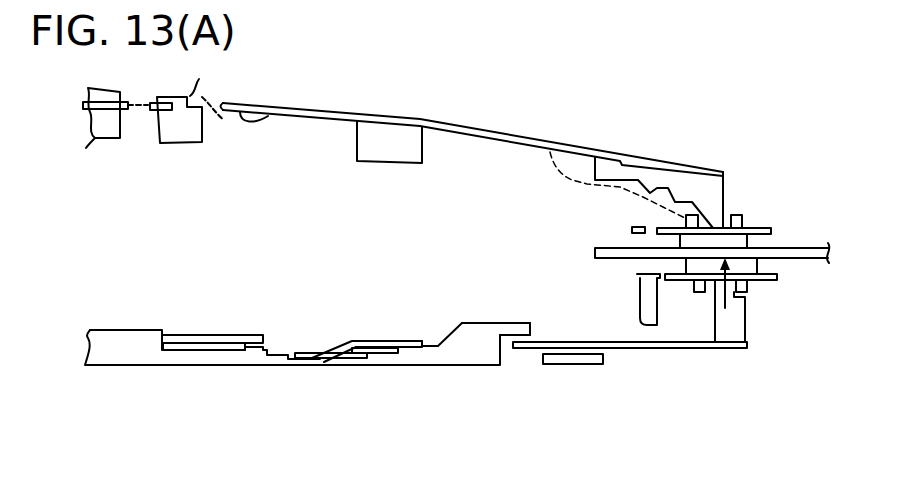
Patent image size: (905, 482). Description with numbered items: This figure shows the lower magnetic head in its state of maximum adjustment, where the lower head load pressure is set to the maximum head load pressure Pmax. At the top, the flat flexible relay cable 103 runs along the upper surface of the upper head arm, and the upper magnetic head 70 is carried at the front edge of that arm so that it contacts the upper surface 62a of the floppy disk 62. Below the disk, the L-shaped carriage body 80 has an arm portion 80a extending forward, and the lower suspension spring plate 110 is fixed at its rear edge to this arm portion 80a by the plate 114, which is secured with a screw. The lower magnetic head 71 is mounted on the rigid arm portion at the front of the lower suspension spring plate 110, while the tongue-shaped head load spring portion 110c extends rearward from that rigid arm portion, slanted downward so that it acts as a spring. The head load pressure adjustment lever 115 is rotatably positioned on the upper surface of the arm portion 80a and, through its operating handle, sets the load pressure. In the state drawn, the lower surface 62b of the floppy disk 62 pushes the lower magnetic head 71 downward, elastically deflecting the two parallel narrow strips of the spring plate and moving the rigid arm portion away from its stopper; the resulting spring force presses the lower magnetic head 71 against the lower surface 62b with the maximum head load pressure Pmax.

The flat flexible relay cable 103 is at (487, 128).
The carriage body 80 is at (637, 146).
The arm portion 80a is at (517, 325).
The upper magnetic head 70 is at (740, 240).
The floppy disk 62 is at (807, 247).
The upper surface of the floppy disk 62a is at (777, 247).
The lower surface of the floppy disk 62b is at (795, 262).
The lower magnetic head 71 is at (759, 260).
The lower suspension spring plate 110 is at (640, 350).
The tongue-shaped head load spring portion 110c is at (329, 342).
The plate 114 is at (208, 335).
The head load pressure adjustment lever 115 is at (363, 358).
The maximum head load pressure Pmax is at (725, 308).